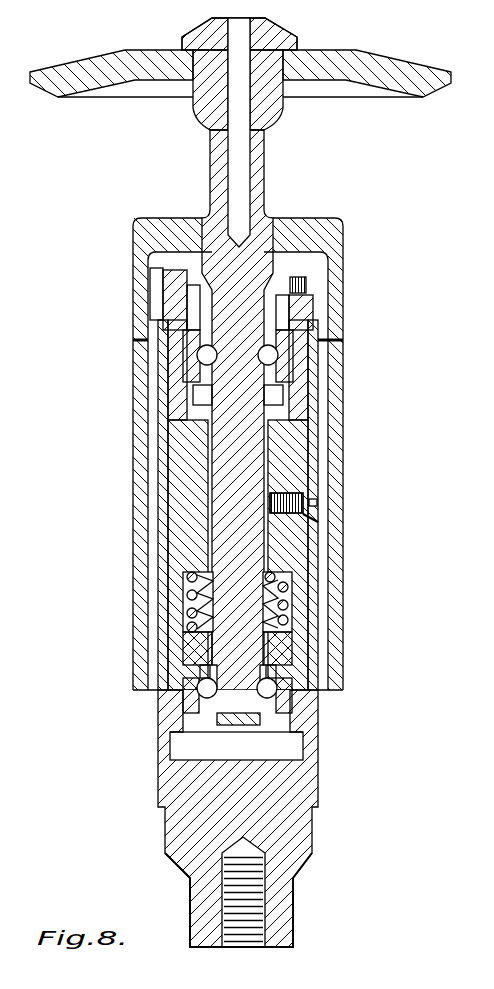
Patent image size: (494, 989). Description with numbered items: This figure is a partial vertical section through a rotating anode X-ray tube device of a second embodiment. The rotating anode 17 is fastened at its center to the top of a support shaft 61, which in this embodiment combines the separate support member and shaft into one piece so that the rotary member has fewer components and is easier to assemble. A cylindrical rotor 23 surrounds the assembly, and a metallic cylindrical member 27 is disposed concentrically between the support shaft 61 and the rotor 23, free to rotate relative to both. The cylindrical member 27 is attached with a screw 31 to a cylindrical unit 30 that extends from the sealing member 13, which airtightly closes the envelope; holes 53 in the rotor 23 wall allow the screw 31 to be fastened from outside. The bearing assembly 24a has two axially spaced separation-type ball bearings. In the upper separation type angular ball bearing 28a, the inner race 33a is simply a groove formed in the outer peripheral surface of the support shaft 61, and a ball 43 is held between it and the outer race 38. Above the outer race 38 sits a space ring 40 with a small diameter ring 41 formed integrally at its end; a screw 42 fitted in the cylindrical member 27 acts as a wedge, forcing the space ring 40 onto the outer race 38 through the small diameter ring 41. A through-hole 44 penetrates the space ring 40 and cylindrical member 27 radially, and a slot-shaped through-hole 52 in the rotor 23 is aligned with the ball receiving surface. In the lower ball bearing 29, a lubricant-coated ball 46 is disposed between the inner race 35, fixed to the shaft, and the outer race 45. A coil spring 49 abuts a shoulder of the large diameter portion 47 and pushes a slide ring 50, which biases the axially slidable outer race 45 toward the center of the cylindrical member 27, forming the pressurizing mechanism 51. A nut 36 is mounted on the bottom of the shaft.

The sealing member 13 is at (183, 853).
The rotating anode 17 is at (353, 62).
The rotor 23 is at (137, 557).
The bearing assembly 24a is at (162, 293).
The cylindrical member 27 is at (177, 485).
The separation type angular ball bearing 28a is at (280, 342).
The ball bearing 29 is at (273, 720).
The cylindrical unit 30 is at (160, 592).
The screw 31 is at (312, 493).
The inner race 33a is at (280, 373).
The inner race 35 is at (217, 670).
The nut 36 is at (217, 715).
The outer race 38 is at (188, 368).
The space ring 40 is at (185, 307).
The small diameter ring 41 is at (193, 290).
The screw 42 is at (297, 285).
The ball 43 is at (203, 355).
The through-hole 44 is at (292, 313).
The outer race 45 is at (283, 703).
The ball 46 is at (205, 690).
The large diameter portion 47 is at (277, 570).
The coil spring 49 is at (283, 603).
The slide ring 50 is at (282, 648).
The pressurizing mechanism 51 is at (288, 613).
The through-hole 52 is at (338, 355).
The hole 53 is at (335, 503).
The support shaft 61 is at (255, 262).